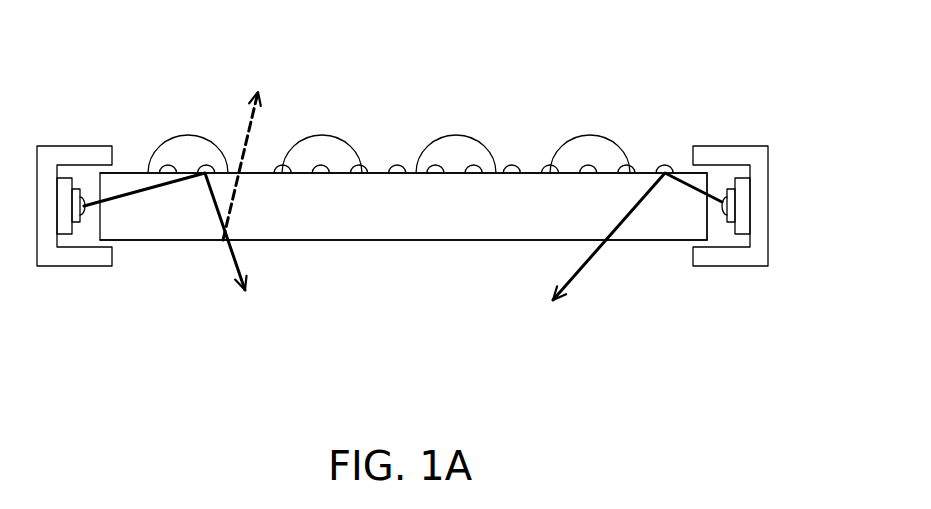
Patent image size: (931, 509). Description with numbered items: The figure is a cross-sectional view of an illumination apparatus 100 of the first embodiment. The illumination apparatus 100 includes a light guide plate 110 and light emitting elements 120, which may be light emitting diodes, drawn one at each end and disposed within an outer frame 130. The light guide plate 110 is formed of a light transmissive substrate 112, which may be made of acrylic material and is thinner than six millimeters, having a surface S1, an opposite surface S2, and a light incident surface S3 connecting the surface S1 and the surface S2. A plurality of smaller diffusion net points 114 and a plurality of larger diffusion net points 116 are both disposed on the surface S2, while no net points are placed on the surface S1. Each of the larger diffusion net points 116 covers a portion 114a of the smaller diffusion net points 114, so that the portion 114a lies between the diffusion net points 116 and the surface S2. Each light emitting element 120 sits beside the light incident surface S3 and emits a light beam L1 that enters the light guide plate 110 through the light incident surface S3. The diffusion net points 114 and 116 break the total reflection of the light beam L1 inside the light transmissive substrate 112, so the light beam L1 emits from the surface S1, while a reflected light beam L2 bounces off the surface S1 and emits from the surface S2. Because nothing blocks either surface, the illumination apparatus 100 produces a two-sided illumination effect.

The illumination apparatus 100 is at (772, 390).
The light guide plate 110 is at (403, 162).
The light transmissive substrate 112 is at (382, 190).
The diffusion net points 114 is at (417, 186).
The portion of the diffusion net points 114a is at (285, 173).
The diffusion net points 116 is at (320, 145).
The light emitting element 120 is at (85, 217).
The outer frame 130 is at (43, 233).
The light beam L1 is at (233, 257).
The light beam L2 is at (247, 127).
The surface S1 is at (660, 242).
The surface S2 is at (648, 170).
The light incident surface S3 is at (708, 225).